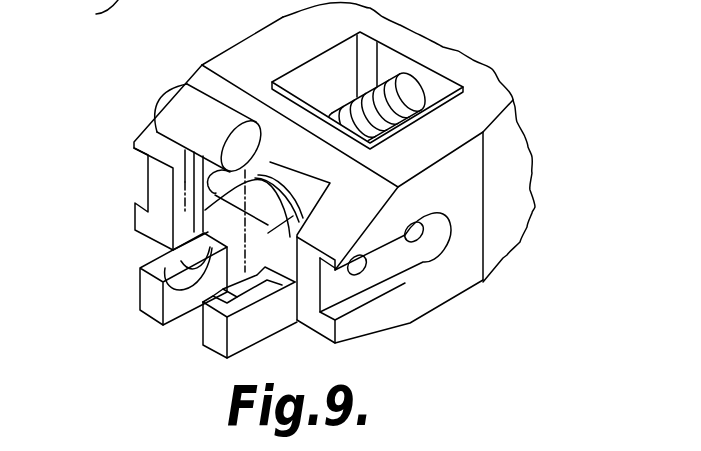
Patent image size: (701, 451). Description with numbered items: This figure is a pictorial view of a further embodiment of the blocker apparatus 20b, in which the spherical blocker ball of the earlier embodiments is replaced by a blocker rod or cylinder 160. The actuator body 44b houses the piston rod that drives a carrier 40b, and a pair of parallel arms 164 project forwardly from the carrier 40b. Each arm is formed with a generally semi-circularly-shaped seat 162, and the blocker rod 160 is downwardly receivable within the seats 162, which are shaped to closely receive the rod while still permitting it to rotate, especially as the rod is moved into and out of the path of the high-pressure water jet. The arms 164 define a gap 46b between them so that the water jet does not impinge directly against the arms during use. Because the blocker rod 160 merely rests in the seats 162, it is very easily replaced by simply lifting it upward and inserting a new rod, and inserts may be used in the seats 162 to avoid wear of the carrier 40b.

The blocker apparatus 20b is at (182, 50).
The body 44b is at (507, 257).
The blocker rod 160 is at (182, 108).
The carrier 40b is at (228, 212).
The gap 46b is at (190, 330).
The arms 164 is at (147, 283).
The seats 162 is at (185, 267).